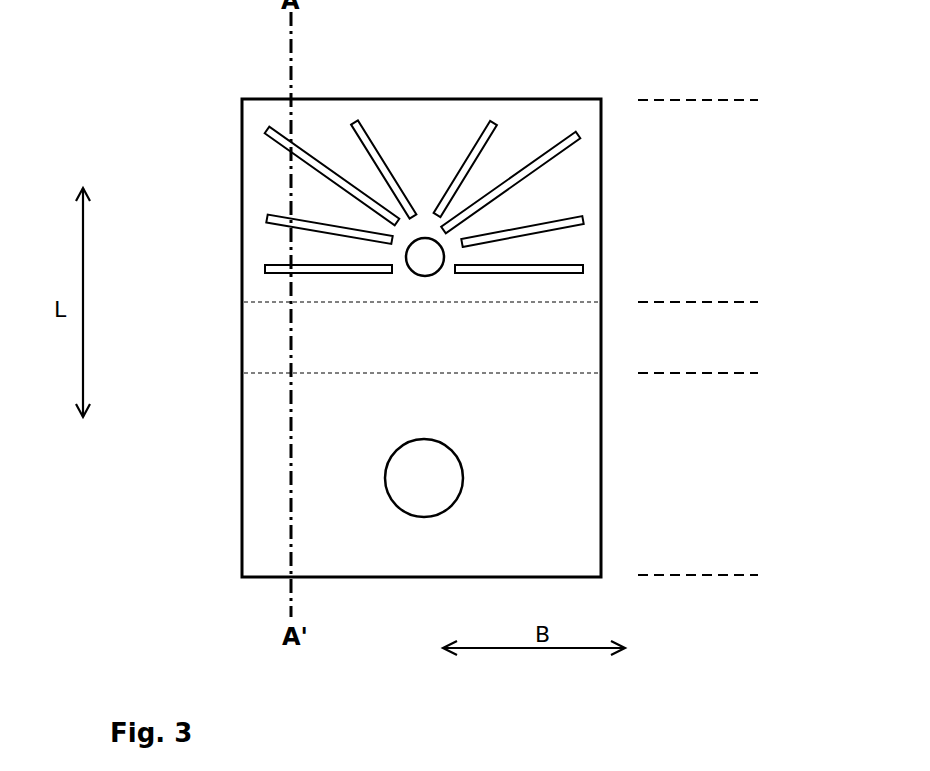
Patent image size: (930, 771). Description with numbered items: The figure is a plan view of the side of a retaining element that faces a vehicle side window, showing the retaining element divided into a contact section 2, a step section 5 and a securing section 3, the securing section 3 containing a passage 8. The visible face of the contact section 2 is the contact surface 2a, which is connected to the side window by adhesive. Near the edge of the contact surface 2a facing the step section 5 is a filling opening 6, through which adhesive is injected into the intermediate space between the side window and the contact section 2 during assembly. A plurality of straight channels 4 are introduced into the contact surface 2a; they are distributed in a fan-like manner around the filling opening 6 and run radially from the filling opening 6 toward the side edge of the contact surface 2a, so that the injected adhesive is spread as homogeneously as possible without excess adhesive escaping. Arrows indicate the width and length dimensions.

The contact surface 2a is at (535, 123).
The contact section 2 is at (770, 100).
The securing section 3 is at (770, 375).
The channels 4 is at (265, 131).
The step section 5 is at (770, 304).
The filling opening 6 is at (424, 238).
The passage 8 is at (463, 483).